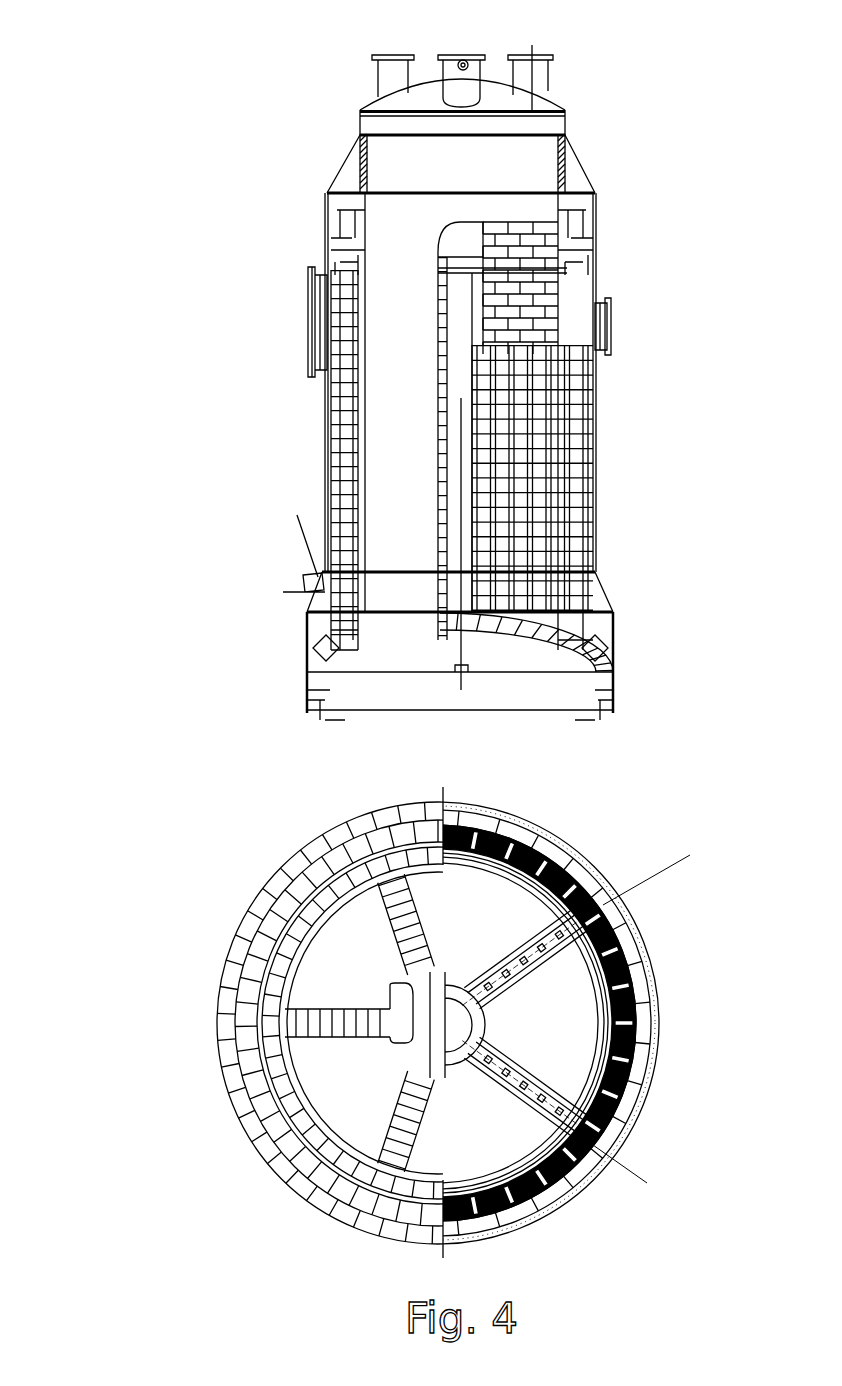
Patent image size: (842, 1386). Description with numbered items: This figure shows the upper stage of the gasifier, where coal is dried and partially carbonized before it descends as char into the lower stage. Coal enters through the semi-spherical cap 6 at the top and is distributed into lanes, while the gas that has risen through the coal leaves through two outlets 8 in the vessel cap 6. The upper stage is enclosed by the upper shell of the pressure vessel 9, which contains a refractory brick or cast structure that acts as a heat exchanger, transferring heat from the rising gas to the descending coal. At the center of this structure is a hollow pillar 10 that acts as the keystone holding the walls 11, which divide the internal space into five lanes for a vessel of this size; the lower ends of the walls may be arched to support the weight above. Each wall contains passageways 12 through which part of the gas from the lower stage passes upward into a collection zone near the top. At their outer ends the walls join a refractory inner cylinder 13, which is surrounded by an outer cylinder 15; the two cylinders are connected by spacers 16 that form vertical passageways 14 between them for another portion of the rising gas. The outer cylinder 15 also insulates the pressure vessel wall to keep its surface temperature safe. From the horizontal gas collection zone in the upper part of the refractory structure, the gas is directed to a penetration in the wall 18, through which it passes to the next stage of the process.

The semi-spherical cap 6 is at (557, 108).
The outlets 8 is at (390, 62).
The upper shell of the pressure vessel 9 is at (325, 228).
The hollow pillar 10 is at (455, 395).
The walls 11 is at (578, 540).
The passageways 12 is at (607, 1027).
The refractory inner cylinder 13 is at (540, 935).
The vertical passageways 14 is at (627, 966).
The outer cylinder 15 is at (568, 862).
The spacers 16 is at (625, 1080).
The penetration in the wall 18 is at (310, 322).